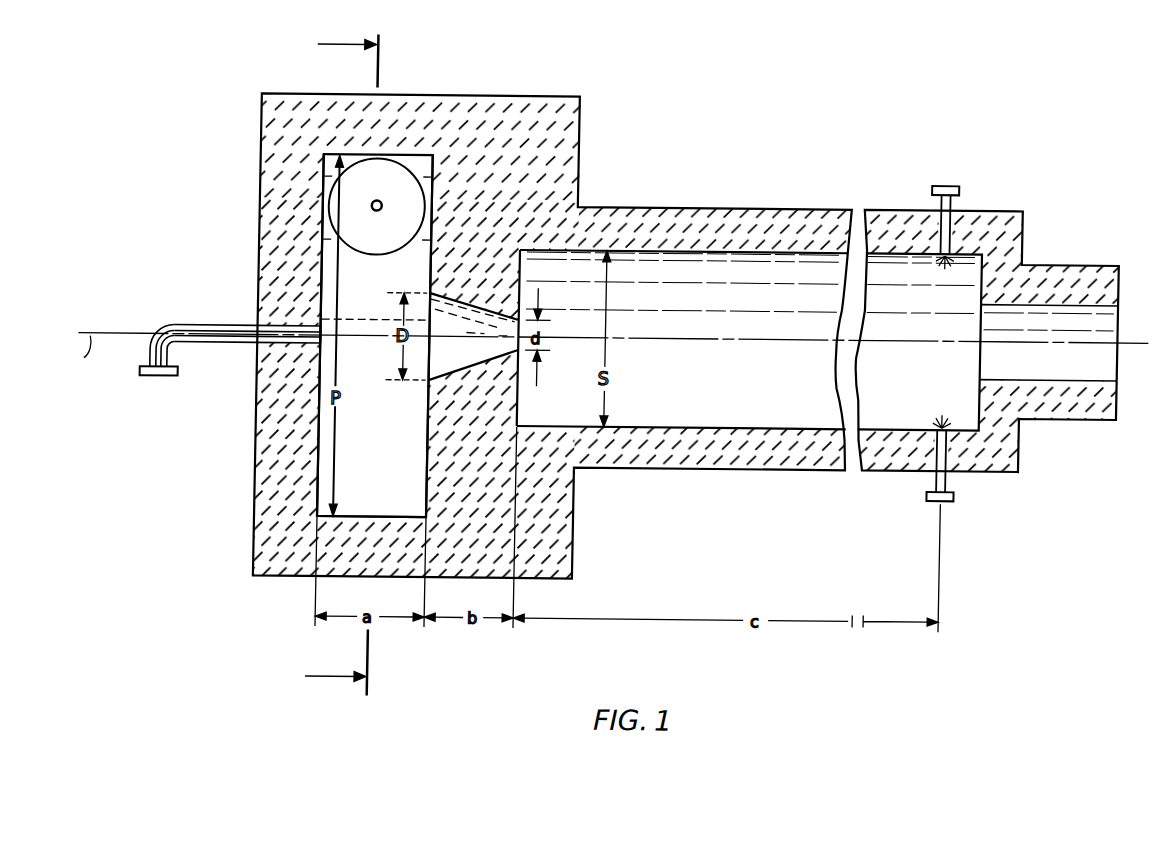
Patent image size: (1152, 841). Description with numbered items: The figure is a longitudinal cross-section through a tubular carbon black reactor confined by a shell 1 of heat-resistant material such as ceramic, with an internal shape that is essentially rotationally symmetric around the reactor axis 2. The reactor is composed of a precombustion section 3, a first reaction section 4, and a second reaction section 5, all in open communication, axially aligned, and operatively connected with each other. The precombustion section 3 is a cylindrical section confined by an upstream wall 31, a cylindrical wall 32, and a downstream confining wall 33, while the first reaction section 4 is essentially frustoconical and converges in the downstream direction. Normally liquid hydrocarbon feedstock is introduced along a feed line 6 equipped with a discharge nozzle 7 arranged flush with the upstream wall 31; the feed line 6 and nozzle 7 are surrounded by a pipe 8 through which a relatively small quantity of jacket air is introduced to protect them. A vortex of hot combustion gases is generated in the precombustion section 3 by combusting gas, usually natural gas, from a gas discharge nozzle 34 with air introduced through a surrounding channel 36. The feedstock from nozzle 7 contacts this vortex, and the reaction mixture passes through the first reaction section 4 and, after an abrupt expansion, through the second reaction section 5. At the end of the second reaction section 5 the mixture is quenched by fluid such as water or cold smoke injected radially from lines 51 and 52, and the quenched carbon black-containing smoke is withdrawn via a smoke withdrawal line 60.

The shell 1 is at (751, 187).
The reactor axis 2 is at (222, 363).
The precombustion section 3 is at (384, 456).
The first reaction section 4 is at (463, 361).
The second reaction section 5 is at (717, 361).
The hydrocarbon feed line 6 is at (158, 330).
The discharge nozzle 7 is at (324, 338).
The pipe 8 is at (214, 348).
The upstream wall 31 is at (322, 465).
The cylindrical wall 32 is at (373, 519).
The downstream confining wall 33 is at (431, 483).
The gas discharge nozzle 34 is at (380, 202).
The channel 36 is at (391, 241).
The quenching fluid line 51 is at (954, 196).
The quenching fluid line 52 is at (951, 478).
The smoke withdrawal line 60 is at (1070, 260).